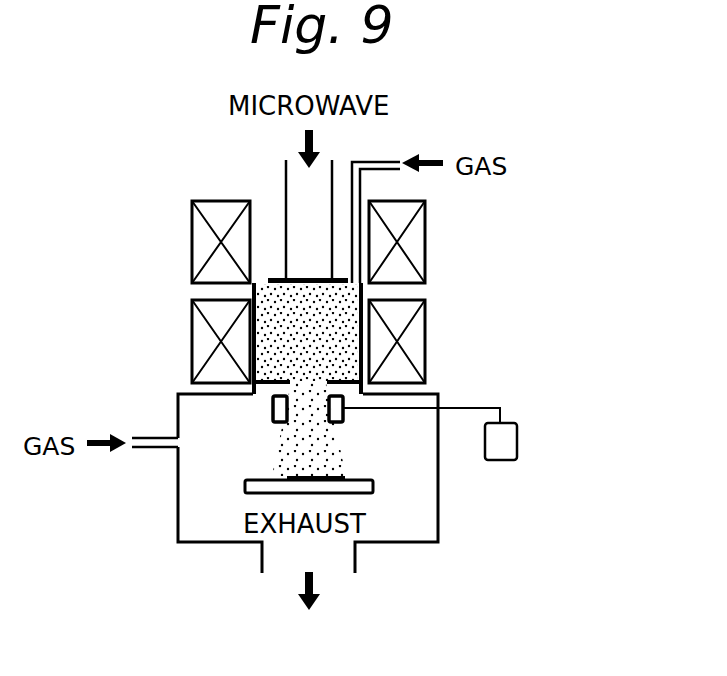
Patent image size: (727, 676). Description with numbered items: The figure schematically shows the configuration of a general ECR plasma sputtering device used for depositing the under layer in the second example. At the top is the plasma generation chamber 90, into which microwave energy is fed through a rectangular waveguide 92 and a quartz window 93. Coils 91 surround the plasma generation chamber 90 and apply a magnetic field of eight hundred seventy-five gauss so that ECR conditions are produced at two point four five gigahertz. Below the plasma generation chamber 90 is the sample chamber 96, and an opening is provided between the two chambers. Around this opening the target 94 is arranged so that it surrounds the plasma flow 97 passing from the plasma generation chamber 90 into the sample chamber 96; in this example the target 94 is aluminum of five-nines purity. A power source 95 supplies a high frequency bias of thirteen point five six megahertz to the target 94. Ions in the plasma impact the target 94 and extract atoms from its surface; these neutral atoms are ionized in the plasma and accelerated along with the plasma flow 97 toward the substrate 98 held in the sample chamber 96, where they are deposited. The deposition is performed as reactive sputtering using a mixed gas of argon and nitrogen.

The plasma generation chamber 90 is at (258, 297).
The coils 91 is at (425, 322).
The rectangular waveguide 92 is at (331, 178).
The quartz window 93 is at (305, 277).
The target 94 is at (273, 413).
The power source 95 is at (517, 438).
The sample chamber 96 is at (183, 530).
The plasma flow 97 is at (297, 462).
The substrate 98 is at (333, 472).